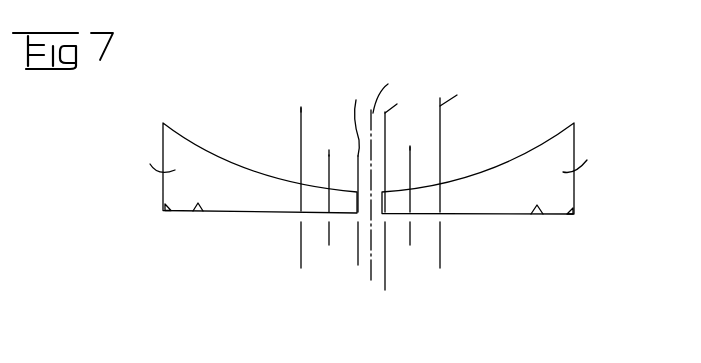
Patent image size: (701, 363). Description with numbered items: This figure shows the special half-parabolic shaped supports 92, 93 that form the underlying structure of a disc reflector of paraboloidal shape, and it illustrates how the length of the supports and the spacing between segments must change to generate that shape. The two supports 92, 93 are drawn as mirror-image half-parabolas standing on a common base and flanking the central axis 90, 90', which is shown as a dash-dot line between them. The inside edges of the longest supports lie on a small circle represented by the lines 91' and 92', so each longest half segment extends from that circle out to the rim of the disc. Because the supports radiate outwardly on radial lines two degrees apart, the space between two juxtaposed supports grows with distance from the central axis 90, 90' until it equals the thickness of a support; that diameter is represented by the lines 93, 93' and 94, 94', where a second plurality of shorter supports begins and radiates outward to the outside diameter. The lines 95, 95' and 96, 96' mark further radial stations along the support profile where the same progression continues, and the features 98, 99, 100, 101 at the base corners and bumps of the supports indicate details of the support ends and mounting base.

The central axis 90 is at (384, 221).
The central axis 90' is at (395, 82).
The inside edge circle line 91' is at (359, 111).
The half-parabolic shaped support 92 is at (242, 236).
The inside edge circle line 92' is at (406, 189).
The half-parabolic shaped support 93 is at (464, 204).
The second diameter line 93' is at (333, 136).
The second diameter line 94 is at (409, 206).
The second diameter line 94' is at (412, 134).
The radial line 95 is at (297, 200).
The radial line 95' is at (298, 96).
The radial line 96 is at (459, 190).
The radial line 96' is at (463, 82).
The left corner 98 is at (160, 209).
The left notch 99 is at (199, 213).
The right notch 100 is at (538, 216).
The right corner 101 is at (578, 213).